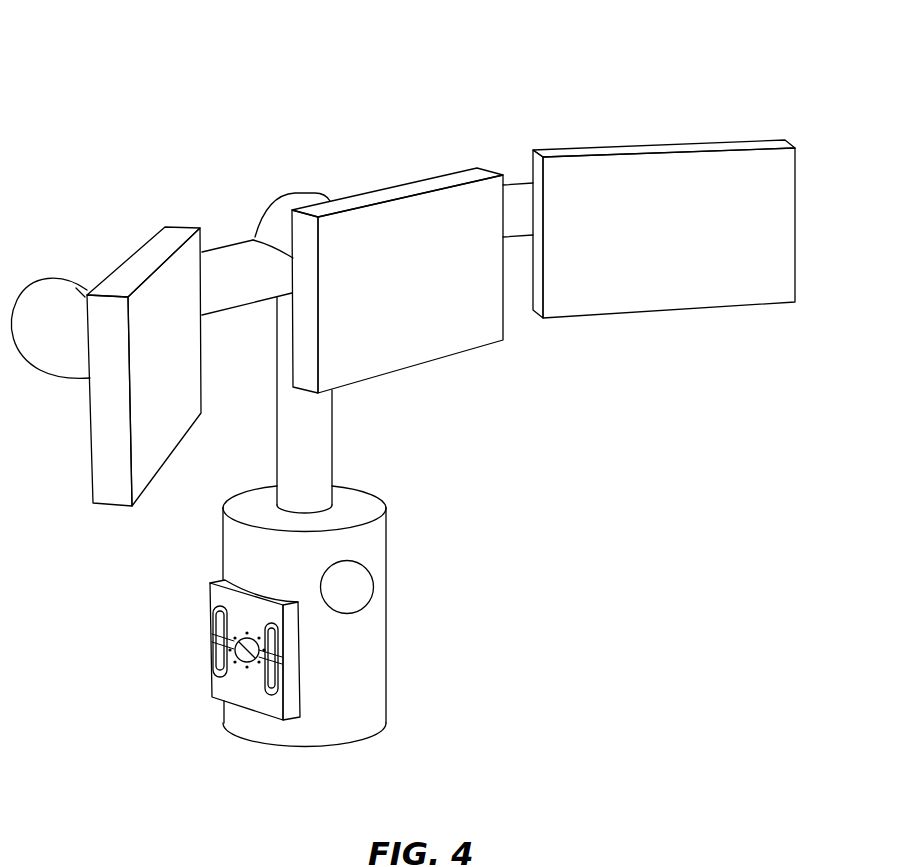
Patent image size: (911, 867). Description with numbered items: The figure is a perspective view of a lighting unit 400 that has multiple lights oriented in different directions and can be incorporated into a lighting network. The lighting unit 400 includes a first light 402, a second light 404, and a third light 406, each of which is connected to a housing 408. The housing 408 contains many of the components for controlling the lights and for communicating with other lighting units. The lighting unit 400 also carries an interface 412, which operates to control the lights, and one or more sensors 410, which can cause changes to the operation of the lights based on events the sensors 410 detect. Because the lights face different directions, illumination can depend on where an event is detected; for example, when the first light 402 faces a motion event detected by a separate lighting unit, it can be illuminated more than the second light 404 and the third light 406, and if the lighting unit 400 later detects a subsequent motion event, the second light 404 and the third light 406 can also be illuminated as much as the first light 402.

The lighting unit 400 is at (130, 100).
The first light 402 is at (143, 240).
The second light 404 is at (400, 184).
The third light 406 is at (657, 149).
The housing 408 is at (386, 533).
The sensors 410 is at (373, 587).
The interface 412 is at (205, 611).